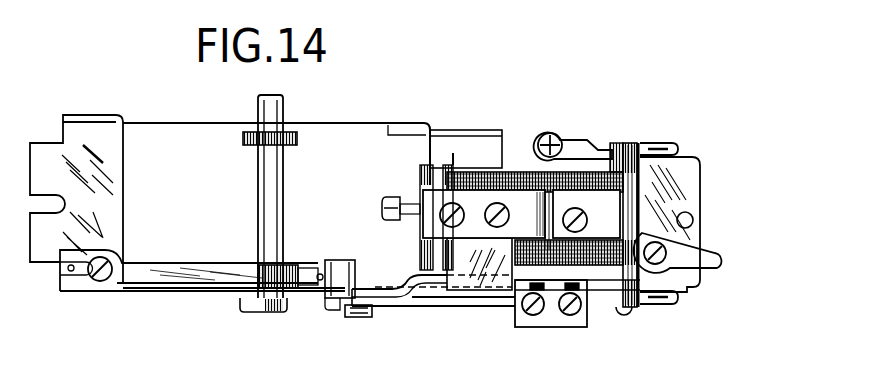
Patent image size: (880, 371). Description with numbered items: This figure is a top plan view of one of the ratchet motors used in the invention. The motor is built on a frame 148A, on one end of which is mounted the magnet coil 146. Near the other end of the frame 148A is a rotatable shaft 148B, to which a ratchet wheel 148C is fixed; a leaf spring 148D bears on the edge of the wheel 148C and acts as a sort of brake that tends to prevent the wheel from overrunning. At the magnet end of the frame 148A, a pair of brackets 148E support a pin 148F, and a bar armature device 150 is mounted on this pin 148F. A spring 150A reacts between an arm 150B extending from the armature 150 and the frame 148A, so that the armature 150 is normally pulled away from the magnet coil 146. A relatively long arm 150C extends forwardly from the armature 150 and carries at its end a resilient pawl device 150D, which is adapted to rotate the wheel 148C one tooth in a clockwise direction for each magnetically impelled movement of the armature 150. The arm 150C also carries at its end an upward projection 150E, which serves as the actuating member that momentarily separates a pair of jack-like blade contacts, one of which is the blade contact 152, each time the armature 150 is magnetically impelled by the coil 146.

The magnet coil 146 is at (508, 180).
The frame 148A is at (390, 125).
The rotatable shaft 148B is at (272, 196).
The ratchet wheel 148C is at (290, 270).
The leaf spring 148D is at (157, 268).
The brackets 148E is at (641, 143).
The pin 148F is at (623, 218).
The bar armature device 150 is at (690, 229).
The spring 150A is at (557, 134).
The arm 150B is at (580, 149).
The arm 150C is at (431, 281).
The resilient pawl device 150D is at (340, 263).
The upward projection 150E is at (358, 315).
The jack-like blade contact 152 is at (367, 298).